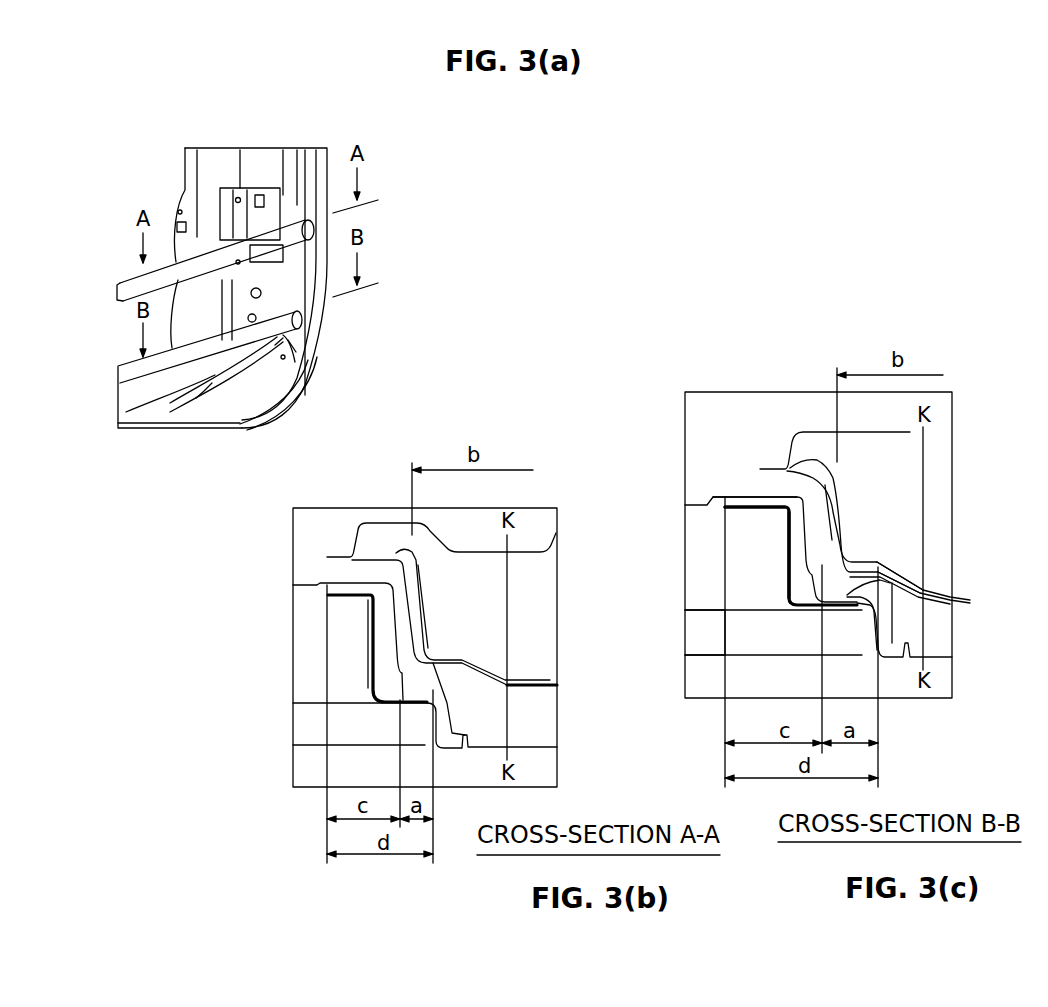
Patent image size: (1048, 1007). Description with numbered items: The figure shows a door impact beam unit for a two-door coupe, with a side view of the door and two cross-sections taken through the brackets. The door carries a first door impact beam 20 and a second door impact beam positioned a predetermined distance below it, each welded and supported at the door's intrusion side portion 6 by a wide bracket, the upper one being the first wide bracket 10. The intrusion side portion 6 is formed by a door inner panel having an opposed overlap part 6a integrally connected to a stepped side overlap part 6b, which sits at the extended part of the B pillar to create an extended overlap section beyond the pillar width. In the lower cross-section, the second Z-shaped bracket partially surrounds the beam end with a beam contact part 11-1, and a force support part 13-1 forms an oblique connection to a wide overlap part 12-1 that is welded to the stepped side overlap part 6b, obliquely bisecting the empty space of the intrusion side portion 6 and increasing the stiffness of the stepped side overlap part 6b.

The first wide bracket 10 is at (268, 200).
The beam contact part 11-1 is at (797, 578).
The wide overlap part 12-1 is at (764, 508).
The force support part 13-1 is at (755, 505).
The first door impact beam 20 is at (132, 283).
The intrusion side portion 6 is at (1012, 557).
The opposed overlap part 6a is at (902, 578).
The stepped side overlap part 6b is at (813, 538).